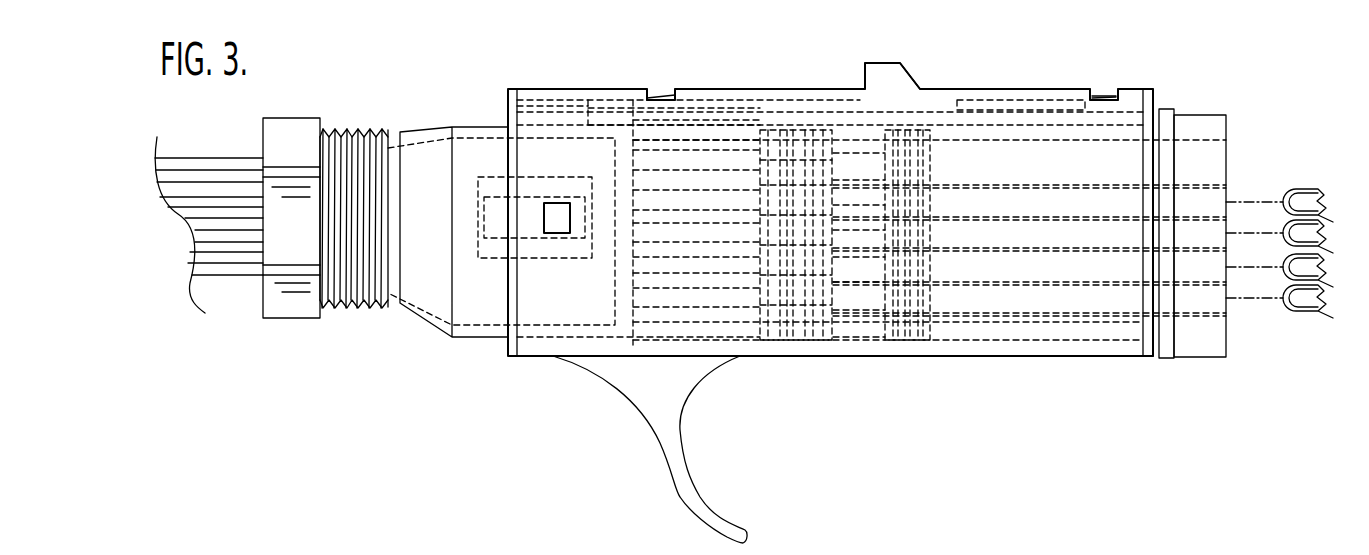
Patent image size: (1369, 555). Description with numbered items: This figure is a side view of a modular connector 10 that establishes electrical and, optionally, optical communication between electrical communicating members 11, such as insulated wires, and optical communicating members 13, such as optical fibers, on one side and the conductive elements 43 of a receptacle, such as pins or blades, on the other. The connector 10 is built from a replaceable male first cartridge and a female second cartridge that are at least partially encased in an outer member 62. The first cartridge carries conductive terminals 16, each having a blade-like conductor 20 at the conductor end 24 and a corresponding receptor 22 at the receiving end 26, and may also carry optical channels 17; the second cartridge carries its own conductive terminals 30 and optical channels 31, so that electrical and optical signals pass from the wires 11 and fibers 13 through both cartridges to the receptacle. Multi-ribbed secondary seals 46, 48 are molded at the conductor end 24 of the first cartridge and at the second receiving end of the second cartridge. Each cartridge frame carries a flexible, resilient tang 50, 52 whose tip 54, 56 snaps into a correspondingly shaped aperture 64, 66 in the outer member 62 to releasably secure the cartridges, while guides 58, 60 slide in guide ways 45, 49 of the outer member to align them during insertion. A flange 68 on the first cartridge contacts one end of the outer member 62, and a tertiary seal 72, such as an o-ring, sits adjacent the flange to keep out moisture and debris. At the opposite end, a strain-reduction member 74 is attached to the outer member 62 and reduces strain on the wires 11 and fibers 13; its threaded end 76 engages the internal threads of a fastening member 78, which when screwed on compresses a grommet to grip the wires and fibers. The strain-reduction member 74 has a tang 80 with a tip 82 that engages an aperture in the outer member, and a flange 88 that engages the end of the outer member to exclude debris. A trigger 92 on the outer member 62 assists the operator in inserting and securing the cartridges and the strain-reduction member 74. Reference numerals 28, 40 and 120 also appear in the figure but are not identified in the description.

The modular connector 10 is at (917, 383).
The electrical communicating members 11 is at (232, 210).
The optical communicating members 13 is at (227, 270).
The conductive terminals 16 is at (1067, 203).
The optical channels 17 is at (1078, 158).
The conductor 20 is at (822, 235).
The receptor 22 is at (1228, 290).
The conductor end 24 is at (833, 157).
The receiving end 26 is at (1213, 115).
The contact passages 28 is at (1030, 215).
The conductive terminals 30 is at (667, 298).
The optical channels 31 is at (742, 145).
The insert 40 is at (708, 317).
The conductive elements 43 is at (1310, 185).
The guide way 45 is at (1012, 195).
The secondary seal 46 is at (898, 340).
The secondary seal 48 is at (780, 343).
The guide way 49 is at (526, 100).
The tang 50 is at (1080, 100).
The tang 52 is at (692, 100).
The tip 54 is at (1108, 92).
The tip 56 is at (658, 97).
The guide 58 is at (993, 110).
The guide 60 is at (742, 157).
The outer member 62 is at (1133, 358).
The aperture 64 is at (1102, 92).
The aperture 66 is at (670, 97).
The flange 68 is at (1156, 90).
The tertiary seal 72 is at (1166, 110).
The strain-reduction member 74 is at (427, 323).
The threaded end 76 is at (332, 130).
The fastening member 78 is at (290, 117).
The tang 80 is at (495, 230).
The tip 82 is at (560, 215).
The flange 88 is at (507, 100).
The trigger 92 is at (683, 500).
The cable assembly 120 is at (957, 549).